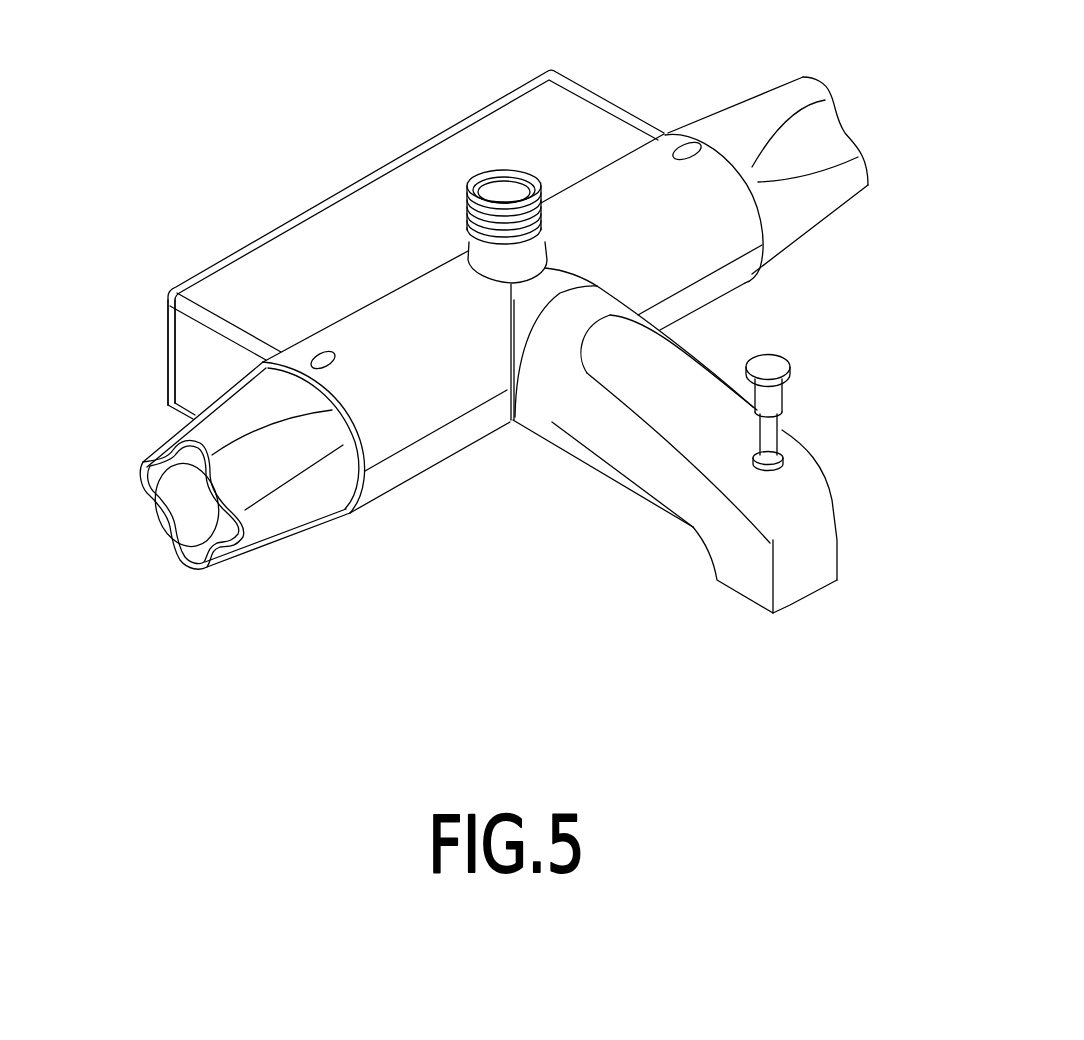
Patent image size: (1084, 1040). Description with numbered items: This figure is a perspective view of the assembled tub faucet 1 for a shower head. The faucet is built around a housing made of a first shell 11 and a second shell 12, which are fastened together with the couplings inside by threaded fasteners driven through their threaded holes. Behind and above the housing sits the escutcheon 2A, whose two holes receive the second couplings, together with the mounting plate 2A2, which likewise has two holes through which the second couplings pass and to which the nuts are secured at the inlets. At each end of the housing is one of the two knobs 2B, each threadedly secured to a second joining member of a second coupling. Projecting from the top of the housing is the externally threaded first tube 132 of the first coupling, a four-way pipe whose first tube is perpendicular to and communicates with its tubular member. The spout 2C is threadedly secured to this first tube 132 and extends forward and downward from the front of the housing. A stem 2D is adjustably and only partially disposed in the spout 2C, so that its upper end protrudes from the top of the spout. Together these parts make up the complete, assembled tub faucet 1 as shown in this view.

The tub faucet 1 is at (545, 346).
The first shell 11 is at (400, 423).
The second shell 12 is at (472, 432).
The first tube 132 is at (487, 192).
The escutcheon 2A is at (587, 127).
The mounting plate 2A2 is at (157, 360).
The knob 2B is at (825, 230).
The spout 2C is at (838, 552).
The stem 2D is at (792, 393).